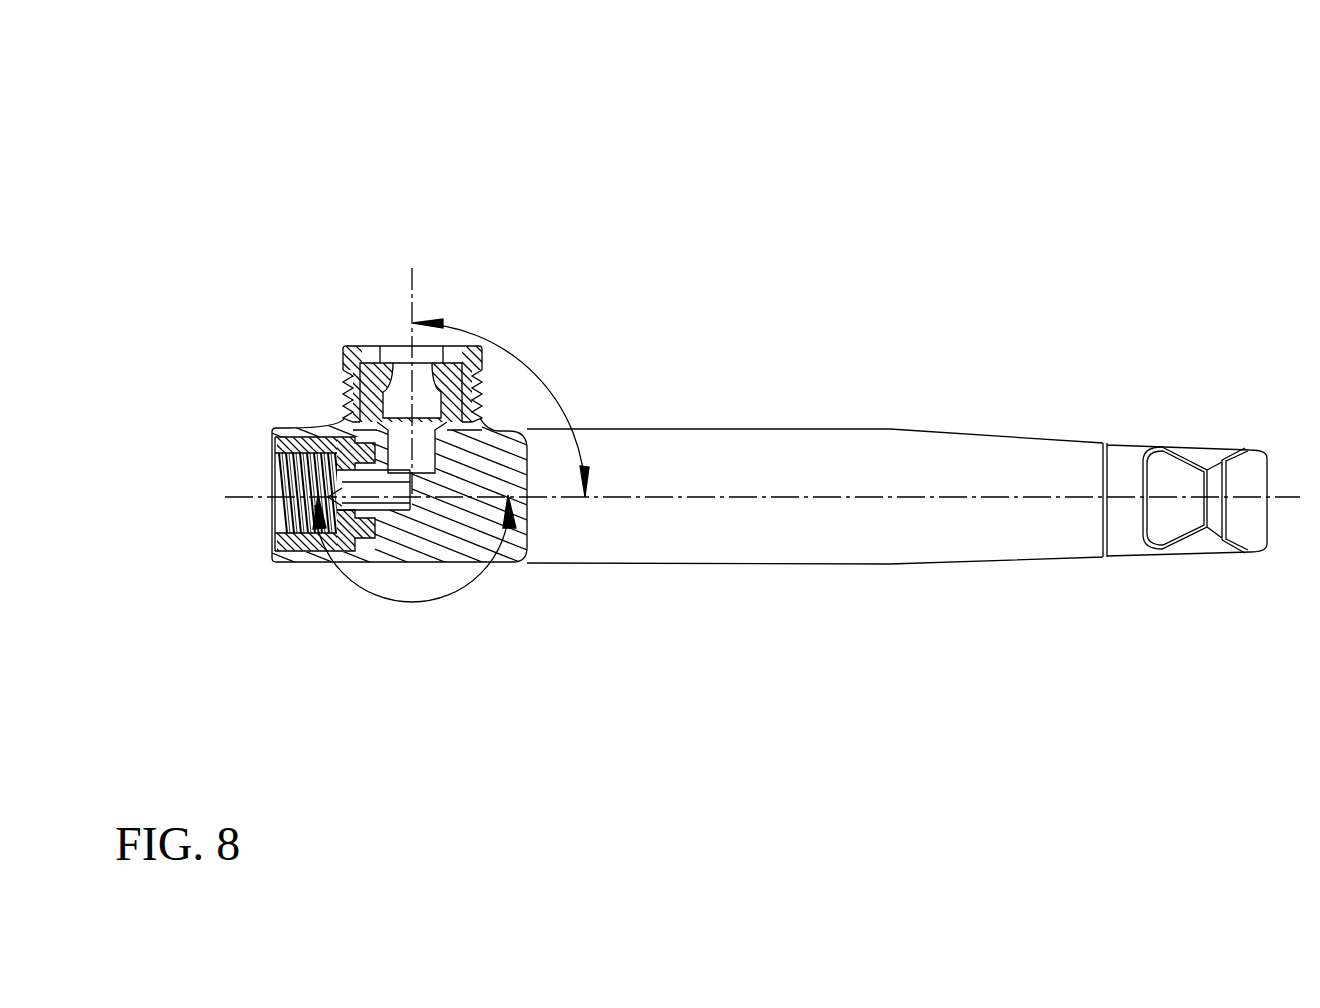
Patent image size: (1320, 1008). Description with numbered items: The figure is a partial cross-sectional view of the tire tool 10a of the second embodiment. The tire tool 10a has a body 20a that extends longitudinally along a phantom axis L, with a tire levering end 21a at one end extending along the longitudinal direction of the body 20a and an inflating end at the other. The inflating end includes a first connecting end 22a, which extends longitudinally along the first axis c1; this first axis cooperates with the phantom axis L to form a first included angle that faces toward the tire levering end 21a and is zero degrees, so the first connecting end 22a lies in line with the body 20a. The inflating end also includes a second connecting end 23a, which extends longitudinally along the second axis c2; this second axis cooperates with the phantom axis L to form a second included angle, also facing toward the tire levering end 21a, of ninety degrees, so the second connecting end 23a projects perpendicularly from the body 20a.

The tire tool 10a is at (950, 148).
The body 20a is at (824, 385).
The tire levering end 21a is at (1247, 473).
The first connecting end 22a is at (292, 514).
The second connecting end 23a is at (400, 372).
The first axis c1 is at (228, 497).
The second axis c2 is at (418, 268).